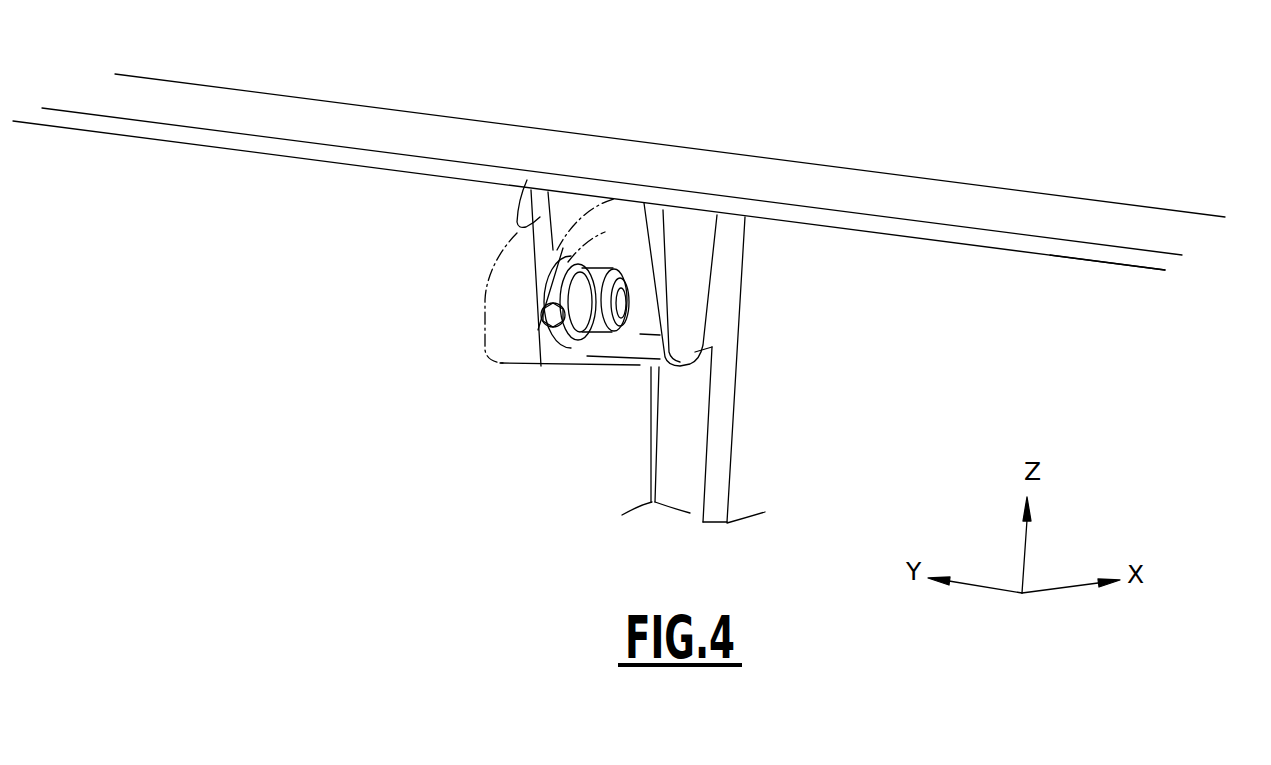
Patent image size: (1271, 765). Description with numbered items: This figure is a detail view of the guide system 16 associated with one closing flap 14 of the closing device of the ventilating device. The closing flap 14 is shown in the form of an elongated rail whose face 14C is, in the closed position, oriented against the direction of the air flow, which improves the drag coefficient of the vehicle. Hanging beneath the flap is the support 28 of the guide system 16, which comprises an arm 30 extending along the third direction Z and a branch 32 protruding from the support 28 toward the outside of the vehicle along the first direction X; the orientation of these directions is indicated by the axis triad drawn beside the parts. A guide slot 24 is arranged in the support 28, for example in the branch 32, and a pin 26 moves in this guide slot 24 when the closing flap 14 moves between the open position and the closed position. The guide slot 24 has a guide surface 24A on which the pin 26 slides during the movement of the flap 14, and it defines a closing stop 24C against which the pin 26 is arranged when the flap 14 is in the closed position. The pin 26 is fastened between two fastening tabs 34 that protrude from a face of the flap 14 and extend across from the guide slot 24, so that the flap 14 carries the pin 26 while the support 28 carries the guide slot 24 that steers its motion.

The closing flap 14 is at (1027, 178).
The face of the flap 14C is at (1108, 223).
The guide system 16 is at (818, 118).
The guide slot 24 is at (623, 230).
The guide surface 24A is at (587, 350).
The closing stop 24C is at (545, 355).
The pin 26 is at (633, 335).
The support 28 is at (756, 399).
The arm 30 is at (718, 442).
The branch 32 is at (710, 336).
The fastening tabs 34 is at (527, 180).